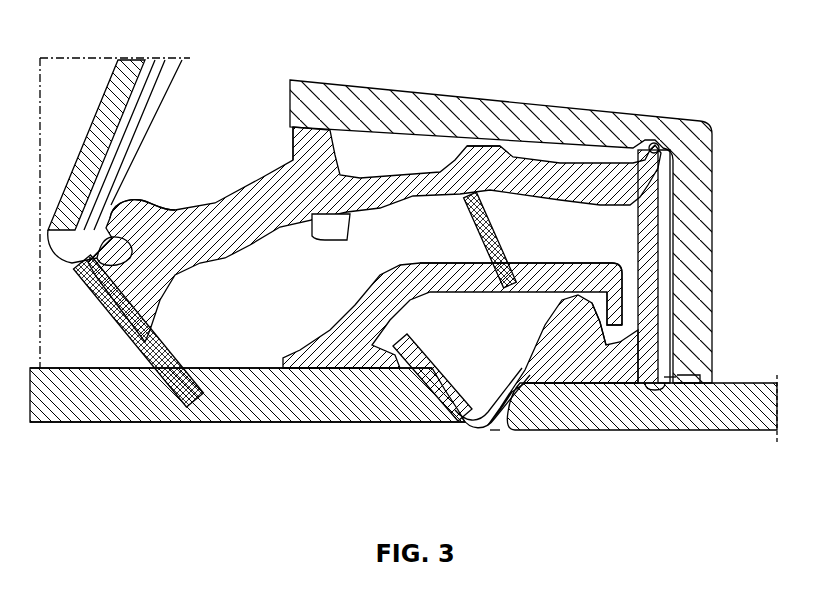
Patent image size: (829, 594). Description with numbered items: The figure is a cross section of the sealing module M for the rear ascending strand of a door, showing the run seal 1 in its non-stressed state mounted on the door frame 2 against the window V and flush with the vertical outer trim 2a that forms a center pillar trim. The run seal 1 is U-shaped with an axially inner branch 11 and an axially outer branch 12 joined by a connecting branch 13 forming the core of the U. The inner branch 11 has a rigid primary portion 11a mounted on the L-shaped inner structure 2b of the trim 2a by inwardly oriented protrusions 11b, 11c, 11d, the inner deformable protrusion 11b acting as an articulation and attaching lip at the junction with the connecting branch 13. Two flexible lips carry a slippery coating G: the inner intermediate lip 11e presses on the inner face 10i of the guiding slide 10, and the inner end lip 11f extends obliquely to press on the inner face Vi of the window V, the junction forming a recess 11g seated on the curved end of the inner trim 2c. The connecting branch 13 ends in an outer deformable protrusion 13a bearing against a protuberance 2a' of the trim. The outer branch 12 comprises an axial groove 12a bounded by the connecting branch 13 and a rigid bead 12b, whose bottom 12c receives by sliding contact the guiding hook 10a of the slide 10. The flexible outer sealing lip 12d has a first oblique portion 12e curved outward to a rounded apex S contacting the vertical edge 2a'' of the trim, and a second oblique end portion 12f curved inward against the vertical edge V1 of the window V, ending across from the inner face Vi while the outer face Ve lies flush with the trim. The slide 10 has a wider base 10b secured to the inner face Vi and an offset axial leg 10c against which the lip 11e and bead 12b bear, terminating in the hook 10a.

The run seal 1 is at (82, 332).
The door frame 2 is at (165, 88).
The vertical outer trim 2a is at (642, 406).
The protuberance 2a' is at (665, 449).
The vertical edge of outer trim 2a'' is at (520, 447).
The inner structure 2b is at (570, 105).
The inner trim 2c is at (66, 258).
The guiding slide 10 is at (366, 287).
The guiding hook 10a is at (640, 300).
The base of slide 10b is at (340, 338).
The axial leg 10c is at (422, 265).
The inner face of slide leg 10i is at (570, 264).
The inner branch 11 is at (216, 190).
The rigid primary portion 11a is at (308, 228).
The inner deformable protrusion 11b is at (656, 144).
The protrusion 11c is at (488, 144).
The protrusion 11d is at (320, 112).
The inner intermediate lip 11e is at (511, 252).
The inner end lip 11f is at (168, 340).
The recess 11g is at (160, 217).
The outer branch 12 is at (489, 440).
The axial groove 12a is at (582, 376).
The rigid bead 12b is at (622, 280).
The groove bottom 12c is at (637, 380).
The flexible outer sealing lip 12d is at (478, 440).
The first oblique portion 12e is at (599, 343).
The second oblique end portion 12f is at (350, 370).
The connecting branch 13 is at (677, 255).
The outer deformable protrusion 13a is at (701, 376).
The slippery coating G is at (668, 210).
The rounded outer apex S is at (478, 396).
The sealing module M is at (270, 468).
The window V is at (253, 400).
The inner face of window Vi is at (223, 367).
The outer face of window Ve is at (230, 425).
The vertical edge of window V1 is at (460, 420).